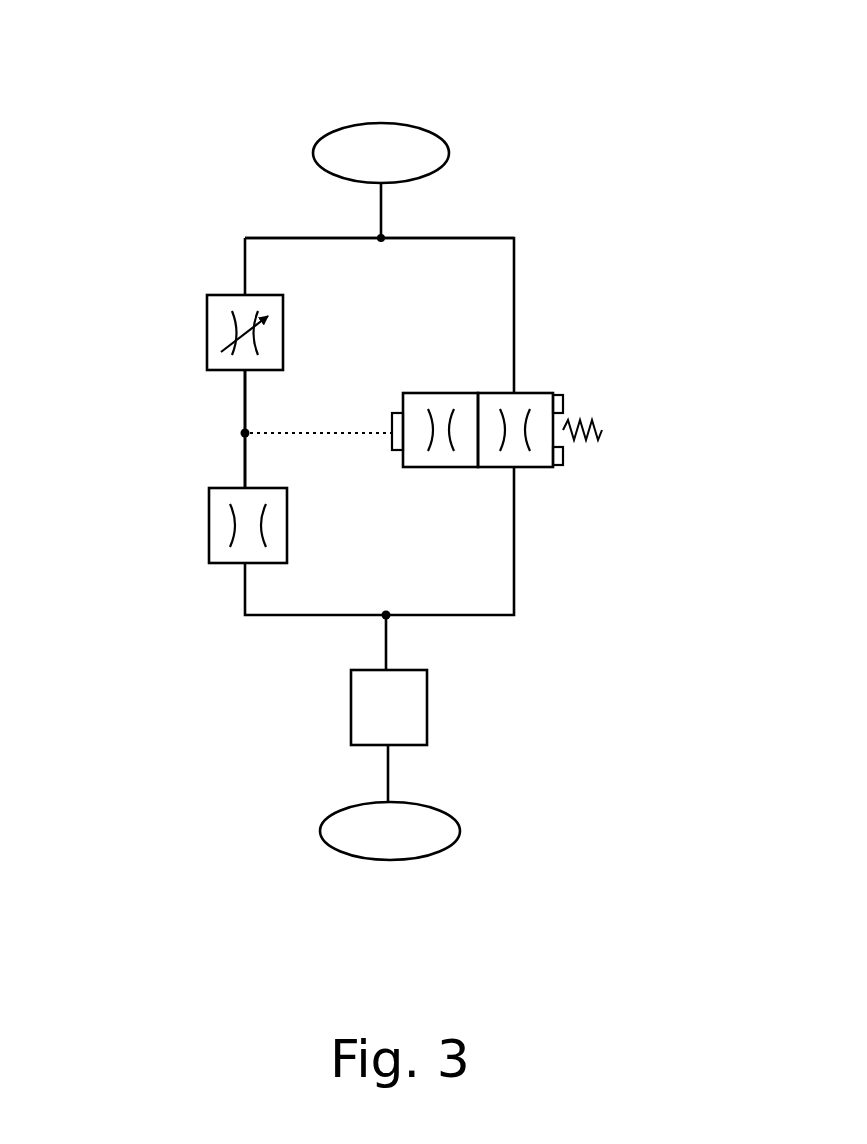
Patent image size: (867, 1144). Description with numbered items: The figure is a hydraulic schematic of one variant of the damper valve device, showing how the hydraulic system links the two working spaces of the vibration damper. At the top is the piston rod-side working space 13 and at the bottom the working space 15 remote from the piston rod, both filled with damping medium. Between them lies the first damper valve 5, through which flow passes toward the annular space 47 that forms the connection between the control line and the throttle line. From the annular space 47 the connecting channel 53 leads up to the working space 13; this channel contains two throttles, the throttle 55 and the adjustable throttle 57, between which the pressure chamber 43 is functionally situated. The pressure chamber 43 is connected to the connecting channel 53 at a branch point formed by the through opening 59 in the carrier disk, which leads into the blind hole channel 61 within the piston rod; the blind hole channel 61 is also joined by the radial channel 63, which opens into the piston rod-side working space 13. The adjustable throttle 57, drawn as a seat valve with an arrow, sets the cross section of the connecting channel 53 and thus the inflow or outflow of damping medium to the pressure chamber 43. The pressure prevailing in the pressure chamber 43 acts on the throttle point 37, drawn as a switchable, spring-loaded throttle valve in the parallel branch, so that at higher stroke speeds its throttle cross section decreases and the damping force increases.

The piston rod-side working space 13 is at (394, 168).
The radial channel 63 is at (275, 238).
The adjustable throttle 57 is at (207, 333).
The pressure chamber 43 is at (300, 433).
The blind hole channel 61 is at (245, 402).
The through opening 59 is at (245, 433).
The connecting channel 53 is at (245, 460).
The throttle 55 is at (222, 532).
The throttle point 37 is at (547, 472).
The annular space 47 is at (392, 618).
The first damper valve 5 is at (410, 717).
The working space 15 is at (430, 857).